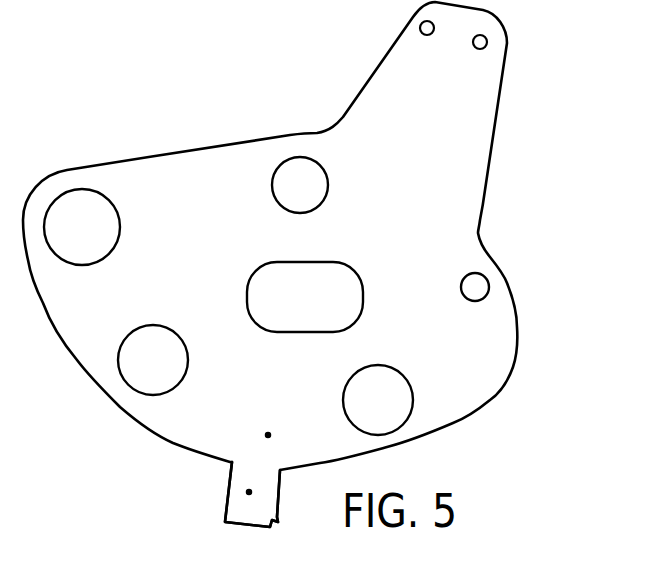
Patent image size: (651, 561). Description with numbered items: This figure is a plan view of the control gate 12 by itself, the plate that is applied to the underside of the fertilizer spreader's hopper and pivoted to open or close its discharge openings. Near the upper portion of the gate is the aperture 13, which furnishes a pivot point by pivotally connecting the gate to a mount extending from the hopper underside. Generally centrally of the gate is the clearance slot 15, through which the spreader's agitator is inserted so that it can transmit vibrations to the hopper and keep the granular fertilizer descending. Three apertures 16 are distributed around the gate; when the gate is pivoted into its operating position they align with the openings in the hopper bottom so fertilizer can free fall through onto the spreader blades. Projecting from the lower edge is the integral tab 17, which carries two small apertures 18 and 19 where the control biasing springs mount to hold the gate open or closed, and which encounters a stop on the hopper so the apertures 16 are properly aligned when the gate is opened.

The control gate 12 is at (481, 222).
The aperture 13 is at (327, 176).
The clearance slot 15 is at (332, 264).
The apertures 16 is at (110, 200).
The integral tab 17 is at (230, 489).
The aperture 18 is at (249, 491).
The aperture 19 is at (270, 434).